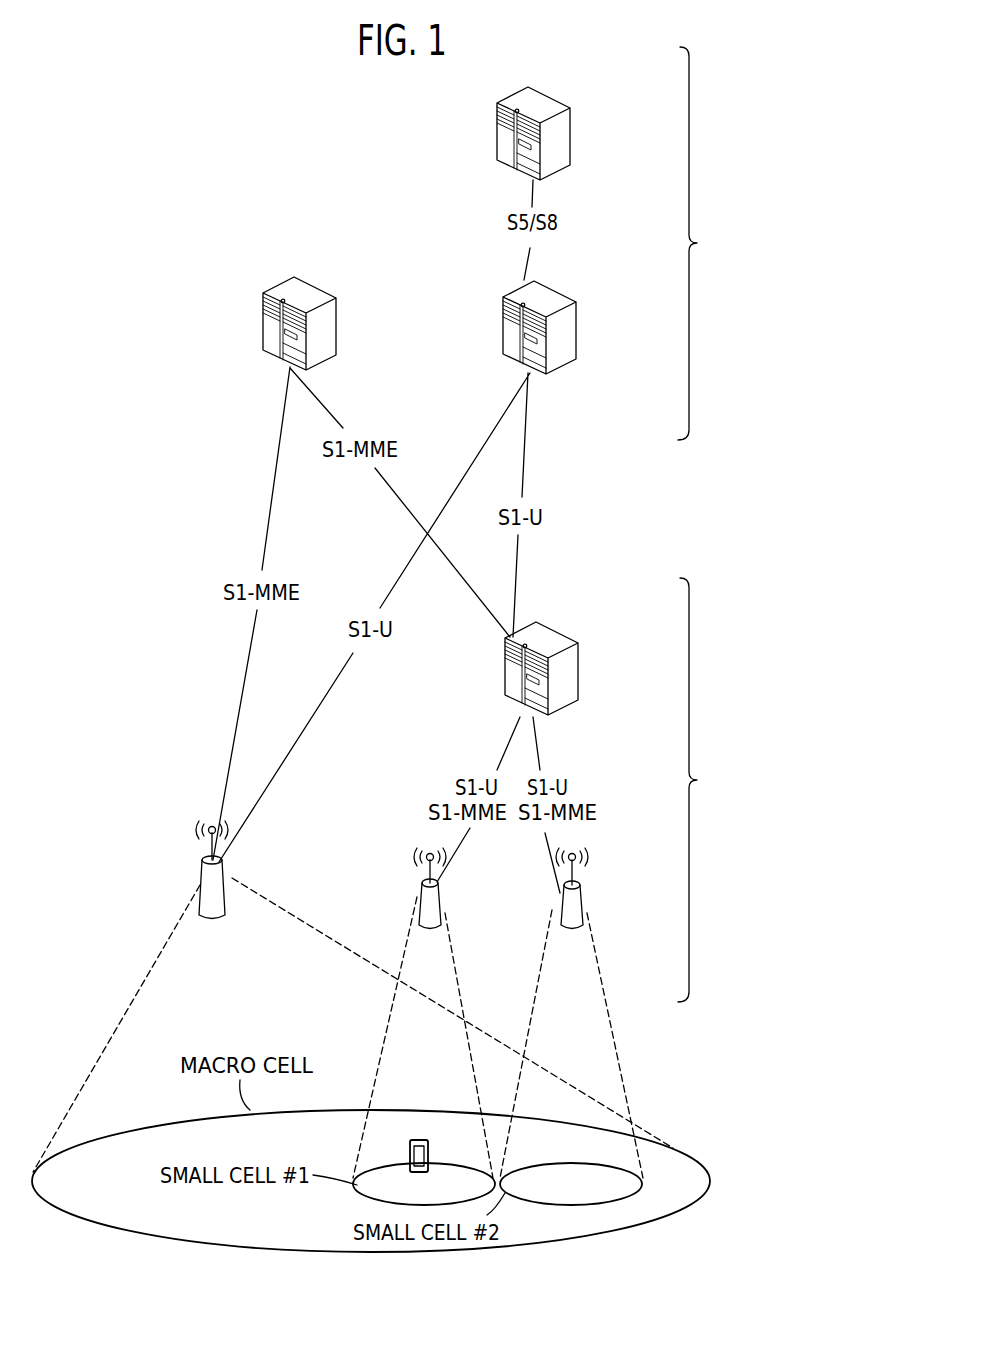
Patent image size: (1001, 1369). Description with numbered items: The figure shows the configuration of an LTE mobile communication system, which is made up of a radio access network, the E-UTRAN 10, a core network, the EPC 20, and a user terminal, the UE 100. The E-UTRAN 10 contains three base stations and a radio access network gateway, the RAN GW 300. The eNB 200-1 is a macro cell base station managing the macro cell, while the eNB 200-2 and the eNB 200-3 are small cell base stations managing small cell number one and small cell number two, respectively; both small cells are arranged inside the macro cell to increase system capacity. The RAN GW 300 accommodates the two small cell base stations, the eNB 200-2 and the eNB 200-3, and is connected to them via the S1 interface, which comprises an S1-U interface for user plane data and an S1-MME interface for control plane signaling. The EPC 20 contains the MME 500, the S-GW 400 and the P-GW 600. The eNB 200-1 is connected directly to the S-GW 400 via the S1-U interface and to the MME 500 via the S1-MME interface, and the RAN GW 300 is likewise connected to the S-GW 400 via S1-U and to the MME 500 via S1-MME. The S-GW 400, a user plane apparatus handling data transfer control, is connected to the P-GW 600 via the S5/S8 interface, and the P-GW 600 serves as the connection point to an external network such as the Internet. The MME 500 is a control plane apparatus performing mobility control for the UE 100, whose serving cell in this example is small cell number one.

The PDN-gateway (P-GW) 600 is at (557, 100).
The mobility management entity (MME) 500 is at (365, 267).
The serving-gateway (S-GW) 400 is at (557, 292).
The radio access network gateway (RAN GW) 300 is at (557, 630).
The evolved packet core (EPC) 20 is at (727, 243).
The evolved-UMTS terrestrial radio access network (E-UTRAN) 10 is at (753, 790).
The eNB (macro cell base station) 200-1 is at (200, 890).
The eNB (small cell base station) 200-2 is at (421, 889).
The eNB (small cell base station) 200-3 is at (580, 890).
The user equipment (UE) 100 is at (420, 1140).